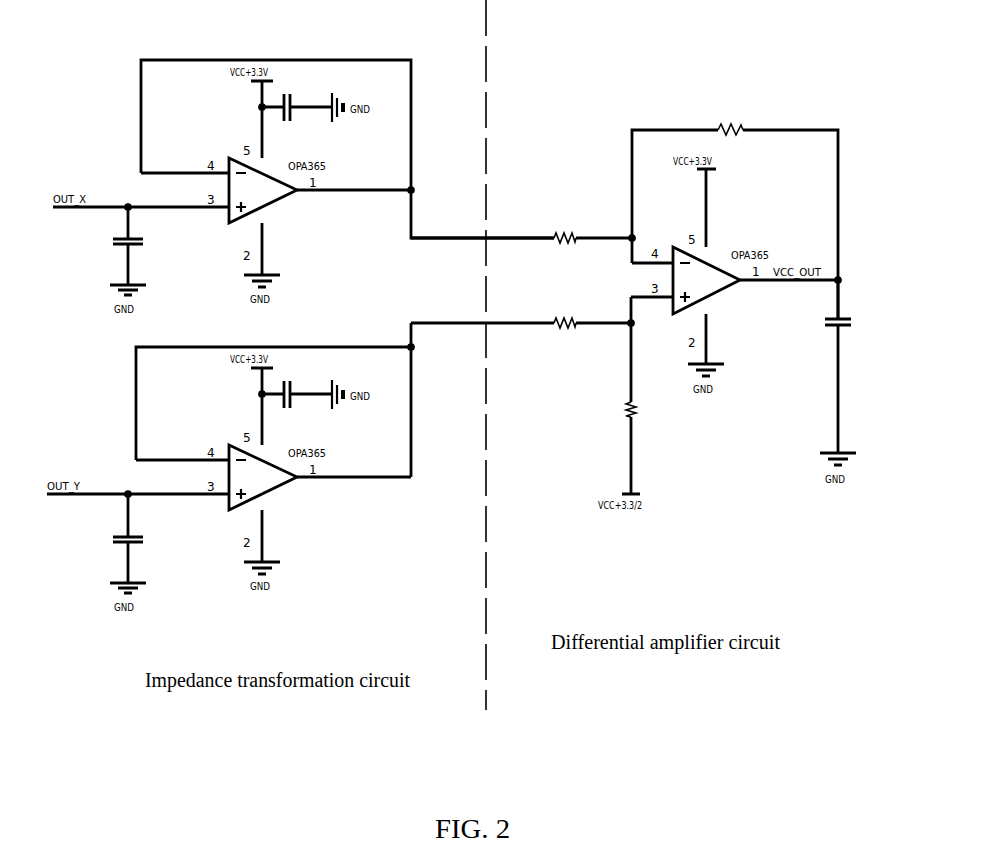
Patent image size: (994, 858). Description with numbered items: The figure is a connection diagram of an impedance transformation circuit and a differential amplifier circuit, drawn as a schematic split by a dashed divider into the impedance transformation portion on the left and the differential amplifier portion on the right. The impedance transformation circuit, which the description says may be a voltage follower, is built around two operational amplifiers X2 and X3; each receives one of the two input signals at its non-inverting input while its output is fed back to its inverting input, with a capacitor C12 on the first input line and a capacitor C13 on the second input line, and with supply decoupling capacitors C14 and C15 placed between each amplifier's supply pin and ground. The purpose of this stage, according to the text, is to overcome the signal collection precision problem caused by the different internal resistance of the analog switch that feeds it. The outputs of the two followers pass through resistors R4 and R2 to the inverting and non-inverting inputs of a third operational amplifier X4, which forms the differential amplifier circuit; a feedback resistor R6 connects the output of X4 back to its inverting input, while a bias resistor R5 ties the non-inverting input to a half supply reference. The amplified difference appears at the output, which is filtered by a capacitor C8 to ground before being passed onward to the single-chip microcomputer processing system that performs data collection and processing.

The operational amplifier OPA365 (impedance transformation, OUT_X channel) X2 is at (269, 190).
The operational amplifier OPA365 (impedance transformation, OUT_Y channel) X3 is at (269, 477).
The operational amplifier OPA365 (differential amplifier) X4 is at (712, 272).
The input capacitor 104/50V on OUT_X C12 is at (149, 246).
The input capacitor 104/50V on OUT_Y C13 is at (149, 538).
The supply decoupling capacitor 104/50V for X2 C14 is at (298, 109).
The supply decoupling capacitor 104/50V for X3 C15 is at (298, 396).
The output capacitor 100puF/50V C8 is at (865, 366).
The input resistor 10K/1/8W to non-inverting input of X4 R2 is at (521, 323).
The input resistor 10K/1/8W to inverting input of X4 R4 is at (521, 239).
The bias resistor 220K/1/8W to VCC+3.3/2 R5 is at (655, 406).
The feedback resistor 220K/1/8W R6 is at (735, 218).